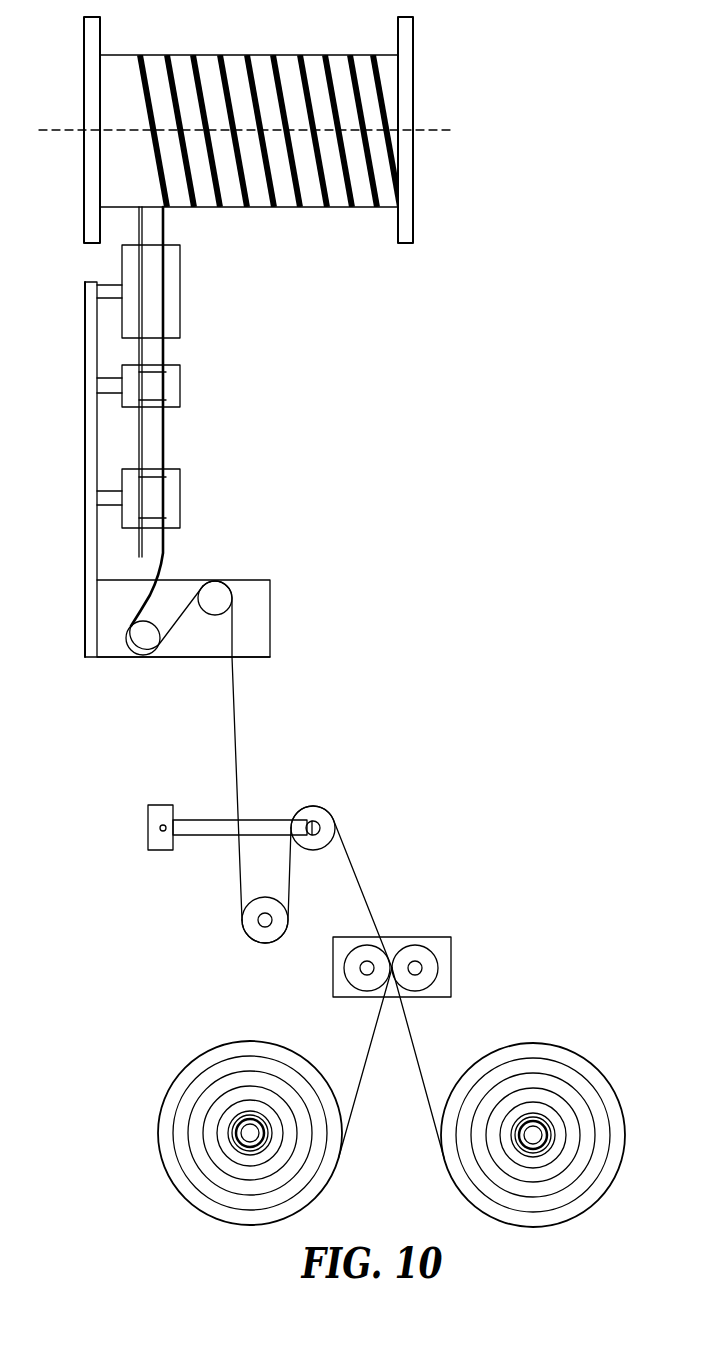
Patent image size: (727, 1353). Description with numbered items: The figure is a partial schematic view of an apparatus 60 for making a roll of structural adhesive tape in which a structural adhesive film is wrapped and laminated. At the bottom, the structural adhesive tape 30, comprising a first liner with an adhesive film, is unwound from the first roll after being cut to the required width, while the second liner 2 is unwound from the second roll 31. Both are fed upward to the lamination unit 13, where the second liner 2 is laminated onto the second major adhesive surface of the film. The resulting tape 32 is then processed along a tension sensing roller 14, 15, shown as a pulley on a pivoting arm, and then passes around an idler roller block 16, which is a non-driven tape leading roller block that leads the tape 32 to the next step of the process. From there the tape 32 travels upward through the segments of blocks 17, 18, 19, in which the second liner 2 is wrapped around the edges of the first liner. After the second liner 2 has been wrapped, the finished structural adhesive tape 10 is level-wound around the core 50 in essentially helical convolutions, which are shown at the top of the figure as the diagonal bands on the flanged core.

The second liner 2 is at (413, 1043).
The structural adhesive tape 10 is at (257, 63).
The lamination unit 13 is at (445, 955).
The tension sensing roller 14 is at (255, 932).
The tension sensing roller 15 is at (265, 825).
The idler roller block 16 is at (260, 618).
The block segment 17 is at (172, 491).
The block segment 18 is at (172, 378).
The block segment 19 is at (172, 288).
The structural adhesive tape 30 is at (185, 1082).
The second roll 31 is at (593, 1077).
The tape 32 is at (237, 722).
The core 50 is at (92, 40).
The yarn laying system 60 is at (402, 427).